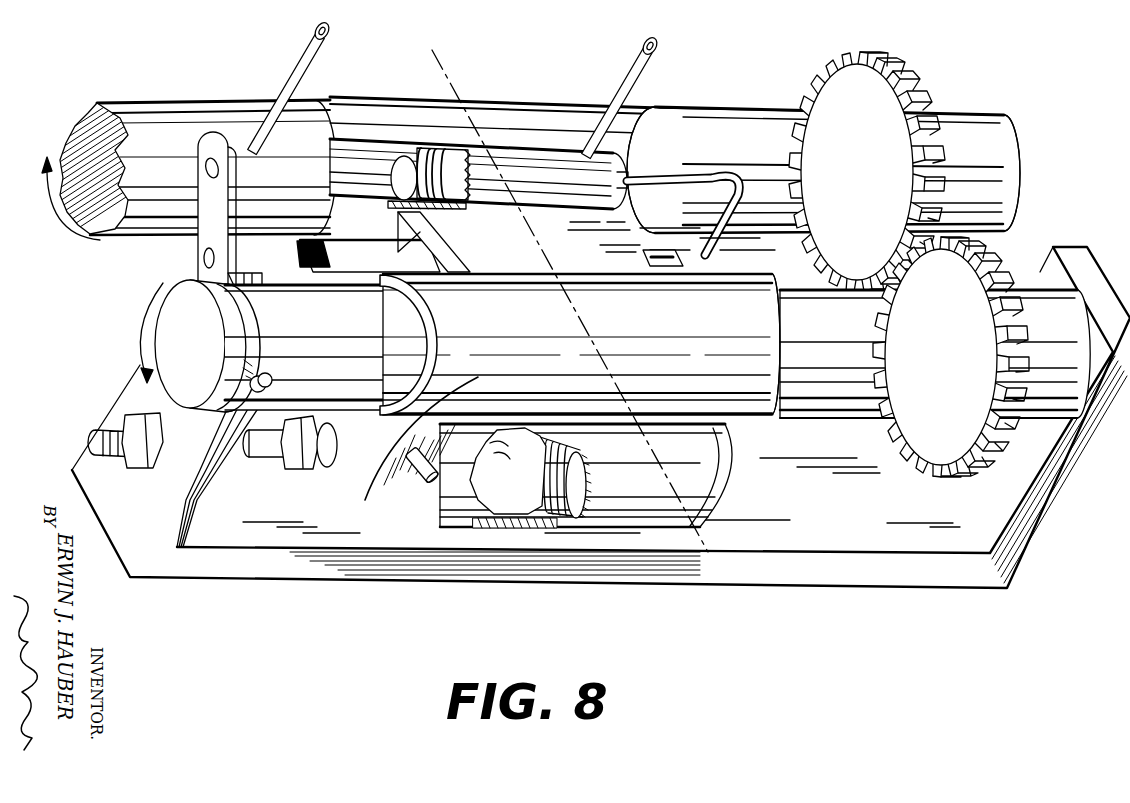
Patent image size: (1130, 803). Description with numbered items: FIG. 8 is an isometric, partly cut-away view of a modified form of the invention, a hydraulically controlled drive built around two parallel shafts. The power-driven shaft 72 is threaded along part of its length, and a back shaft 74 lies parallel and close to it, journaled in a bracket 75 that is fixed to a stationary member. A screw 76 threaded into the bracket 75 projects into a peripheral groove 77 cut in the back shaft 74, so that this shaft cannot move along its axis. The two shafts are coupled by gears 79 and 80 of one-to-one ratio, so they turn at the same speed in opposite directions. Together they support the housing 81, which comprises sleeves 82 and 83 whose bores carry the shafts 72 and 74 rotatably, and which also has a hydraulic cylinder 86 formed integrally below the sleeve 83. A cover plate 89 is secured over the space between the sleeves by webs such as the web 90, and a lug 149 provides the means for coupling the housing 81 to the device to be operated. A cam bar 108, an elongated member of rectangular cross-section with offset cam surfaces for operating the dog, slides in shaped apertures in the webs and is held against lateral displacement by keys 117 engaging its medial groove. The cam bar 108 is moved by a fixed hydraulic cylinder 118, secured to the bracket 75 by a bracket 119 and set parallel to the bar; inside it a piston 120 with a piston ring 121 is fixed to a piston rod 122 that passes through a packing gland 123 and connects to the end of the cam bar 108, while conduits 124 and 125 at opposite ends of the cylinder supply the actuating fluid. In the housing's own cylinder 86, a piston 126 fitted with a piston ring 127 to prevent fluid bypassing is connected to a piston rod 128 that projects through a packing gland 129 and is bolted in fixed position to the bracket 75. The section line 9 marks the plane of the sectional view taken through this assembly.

The section line 9- 9 is at (422, 70).
The power-driven shaft 72 is at (168, 170).
The back shaft 74 is at (200, 346).
The bracket 75 is at (601, 417).
The screw 76 is at (262, 379).
The peripheral groove 77 is at (250, 330).
The gear 79 is at (832, 93).
The gear 80 is at (951, 357).
The housing 81 is at (378, 498).
The sleeve 82 is at (565, 120).
The sleeve 83 is at (736, 346).
The hydraulic cylinder 86 is at (586, 475).
The cover plate 89 is at (670, 242).
The web 90 is at (410, 228).
The cam bar 108 is at (712, 253).
The key 117 is at (418, 247).
The fixed hydraulic cylinder 118 is at (478, 174).
The bracket 119 is at (207, 238).
The piston 120 is at (440, 149).
The piston ring 121 is at (407, 180).
The piston rod 122 is at (712, 176).
The packing gland 123 is at (627, 169).
The conduit 124 is at (297, 68).
The conduit 125 is at (640, 74).
The piston 126 is at (513, 478).
The piston ring 127 is at (561, 460).
The piston rod 128 is at (256, 446).
The packing gland 129 is at (328, 462).
The lug 149 is at (432, 483).